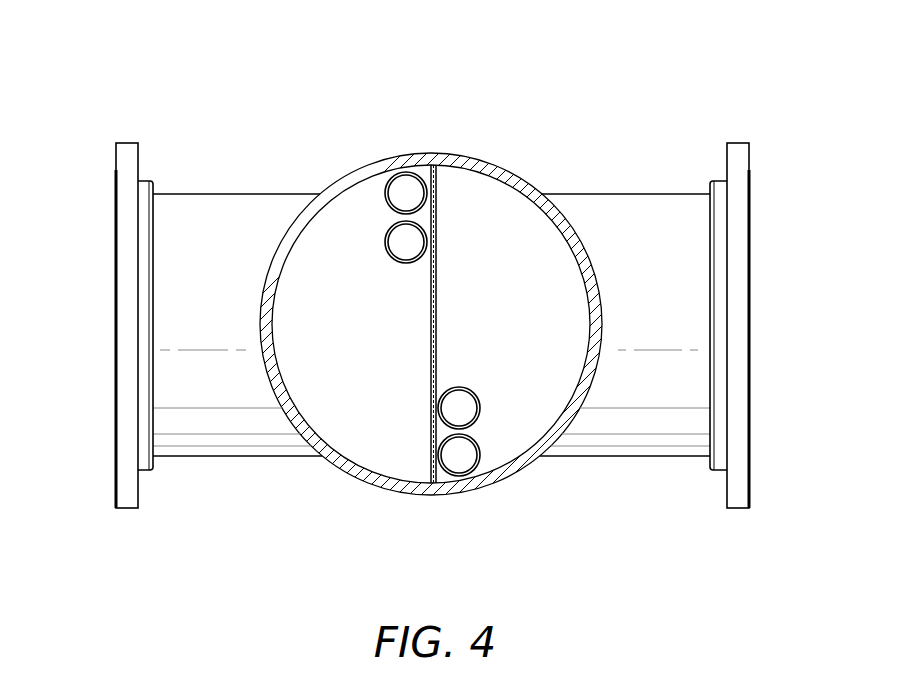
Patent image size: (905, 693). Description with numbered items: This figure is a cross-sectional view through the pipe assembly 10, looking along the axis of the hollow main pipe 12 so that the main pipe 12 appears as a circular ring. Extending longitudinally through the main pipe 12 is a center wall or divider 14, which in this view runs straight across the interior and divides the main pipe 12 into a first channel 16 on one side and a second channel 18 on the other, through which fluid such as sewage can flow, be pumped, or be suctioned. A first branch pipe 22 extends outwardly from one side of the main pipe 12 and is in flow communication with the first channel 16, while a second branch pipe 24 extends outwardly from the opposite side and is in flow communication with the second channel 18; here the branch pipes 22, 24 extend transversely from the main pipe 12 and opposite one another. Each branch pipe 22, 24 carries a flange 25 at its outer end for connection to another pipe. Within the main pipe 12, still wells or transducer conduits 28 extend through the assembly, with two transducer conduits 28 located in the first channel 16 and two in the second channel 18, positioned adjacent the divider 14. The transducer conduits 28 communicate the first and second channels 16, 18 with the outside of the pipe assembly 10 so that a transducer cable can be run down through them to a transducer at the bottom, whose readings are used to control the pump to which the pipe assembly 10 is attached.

The pipe assembly 10 is at (614, 130).
The main pipe 12 is at (468, 156).
The divider 14 is at (438, 283).
The first channel 16 is at (340, 350).
The second channel 18 is at (504, 350).
The first branch pipe 22 is at (200, 215).
The second branch pipe 24 is at (667, 215).
The flange 25 is at (115, 327).
The transducer conduit 28 is at (385, 243).